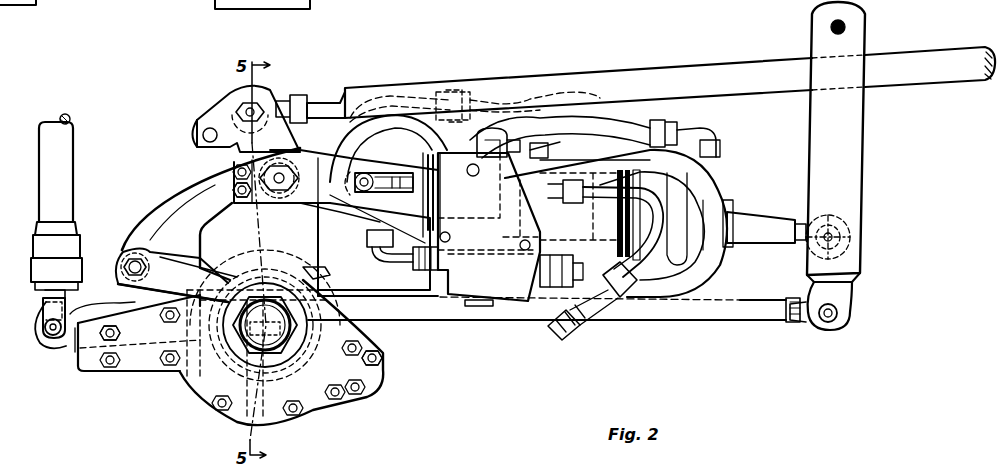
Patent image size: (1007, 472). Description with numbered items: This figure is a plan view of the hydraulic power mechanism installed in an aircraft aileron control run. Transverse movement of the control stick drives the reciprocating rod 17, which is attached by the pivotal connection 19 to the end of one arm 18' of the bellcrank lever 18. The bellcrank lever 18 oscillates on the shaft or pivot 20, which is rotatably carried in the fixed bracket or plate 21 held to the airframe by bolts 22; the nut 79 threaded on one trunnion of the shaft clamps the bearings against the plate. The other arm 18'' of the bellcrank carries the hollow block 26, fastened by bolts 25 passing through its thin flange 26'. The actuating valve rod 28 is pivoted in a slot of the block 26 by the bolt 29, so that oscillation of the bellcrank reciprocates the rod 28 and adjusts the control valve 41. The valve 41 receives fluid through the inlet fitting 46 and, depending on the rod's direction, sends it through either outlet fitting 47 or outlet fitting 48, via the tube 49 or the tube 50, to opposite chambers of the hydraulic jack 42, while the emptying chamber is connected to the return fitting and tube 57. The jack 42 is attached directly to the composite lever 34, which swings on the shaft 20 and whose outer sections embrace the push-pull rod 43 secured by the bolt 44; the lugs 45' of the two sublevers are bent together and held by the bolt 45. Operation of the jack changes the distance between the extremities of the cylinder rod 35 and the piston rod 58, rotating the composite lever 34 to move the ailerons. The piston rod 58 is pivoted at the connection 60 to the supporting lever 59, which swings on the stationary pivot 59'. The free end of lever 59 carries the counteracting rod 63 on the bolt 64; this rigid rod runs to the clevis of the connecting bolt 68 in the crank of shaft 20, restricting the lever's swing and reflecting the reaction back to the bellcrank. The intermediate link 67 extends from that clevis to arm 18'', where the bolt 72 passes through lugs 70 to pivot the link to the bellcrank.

The reciprocating rod 17 is at (62, 172).
The bellcrank lever 18 is at (185, 231).
The bellcrank arm 18' is at (117, 357).
The bellcrank arm 18'' is at (182, 201).
The pivotal connection 19 is at (52, 342).
The shaft or pivot 20 is at (196, 334).
The bracket or plate 21 is at (150, 372).
The bolts 22 is at (110, 368).
The bolts 25 is at (233, 183).
The hollow block 26 is at (236, 241).
The flange 26' is at (226, 198).
The actuating valve rod 28 is at (320, 210).
The bolt 29 is at (297, 153).
The composite lever 34 is at (296, 245).
The cylinder rod 35 is at (416, 160).
The control valve 41 is at (430, 203).
The hydraulic jack 42 is at (558, 163).
The push-pull rod 43 is at (944, 44).
The bolt 44 is at (241, 114).
The bolt 45 is at (186, 138).
The lugs 45' is at (192, 130).
The inlet fitting 46 is at (478, 150).
The outlet fitting and tube 47 is at (420, 270).
The outlet fitting and tube 48 is at (536, 272).
The pipe or tube 49 is at (345, 152).
The pipe or tube 50 is at (700, 255).
The return fitting and tube 57 is at (600, 213).
The piston rod 58 is at (784, 210).
The supporting lever 59 is at (853, 142).
The stationary pivot 59' is at (868, 22).
The pivotal connection 60 is at (836, 237).
The counteracting rod 63 is at (760, 322).
The bolt 64 is at (836, 322).
The intermediate link 67 is at (188, 255).
The connecting bolt 68 is at (263, 398).
The lugs or shoulders 70 is at (126, 246).
The bolt 72 is at (141, 258).
The nut 79 is at (240, 365).